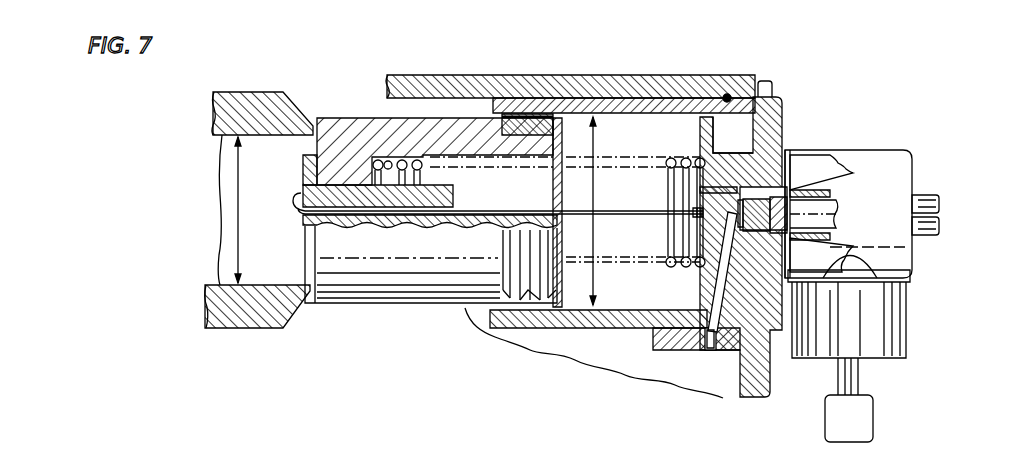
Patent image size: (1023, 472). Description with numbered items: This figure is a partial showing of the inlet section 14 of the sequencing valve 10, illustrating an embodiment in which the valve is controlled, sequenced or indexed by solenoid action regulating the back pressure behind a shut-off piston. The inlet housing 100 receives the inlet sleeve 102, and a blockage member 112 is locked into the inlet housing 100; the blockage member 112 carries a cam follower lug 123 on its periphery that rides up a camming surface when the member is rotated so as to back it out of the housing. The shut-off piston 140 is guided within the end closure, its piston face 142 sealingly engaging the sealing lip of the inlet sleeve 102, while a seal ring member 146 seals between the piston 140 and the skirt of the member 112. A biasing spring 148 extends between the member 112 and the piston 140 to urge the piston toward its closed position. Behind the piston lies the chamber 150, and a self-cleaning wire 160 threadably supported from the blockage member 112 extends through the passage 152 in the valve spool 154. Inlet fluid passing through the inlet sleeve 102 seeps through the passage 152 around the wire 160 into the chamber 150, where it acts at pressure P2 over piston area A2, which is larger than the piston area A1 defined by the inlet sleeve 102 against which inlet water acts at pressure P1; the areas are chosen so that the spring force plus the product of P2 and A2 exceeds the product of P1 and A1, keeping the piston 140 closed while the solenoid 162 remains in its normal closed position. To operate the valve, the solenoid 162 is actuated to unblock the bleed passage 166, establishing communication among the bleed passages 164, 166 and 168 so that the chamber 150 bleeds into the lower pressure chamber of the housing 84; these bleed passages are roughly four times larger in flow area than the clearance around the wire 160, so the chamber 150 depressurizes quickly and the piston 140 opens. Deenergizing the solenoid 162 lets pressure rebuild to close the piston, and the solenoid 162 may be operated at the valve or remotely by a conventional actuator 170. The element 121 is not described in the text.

The valve 10 is at (762, 51).
The inlet section 14 is at (640, 76).
The housing 84 is at (681, 375).
The inlet housing 100 is at (425, 76).
The inlet sleeve 102 is at (253, 92).
The blockage member 112 is at (783, 129).
The O-ring seal 121 is at (703, 97).
The cam follower lug 123 is at (771, 88).
The shut-off piston 140 is at (357, 119).
The piston face 142 is at (307, 285).
The seal ring member 146 is at (523, 116).
The biasing spring 148 is at (676, 160).
The chamber 150 is at (646, 293).
The passage 152 is at (447, 206).
The valve spool 154 is at (437, 188).
The self-cleaning wire 160 is at (660, 210).
The solenoid 162 is at (893, 224).
The bleed passage 164 is at (722, 188).
The bleed passage 166 is at (710, 286).
The bleed passage 168 is at (712, 348).
The actuator 170 is at (864, 422).
The piston area A1 is at (240, 210).
The piston area A2 is at (597, 211).
The inlet pressure P1 is at (266, 184).
The chamber pressure P2 is at (622, 238).